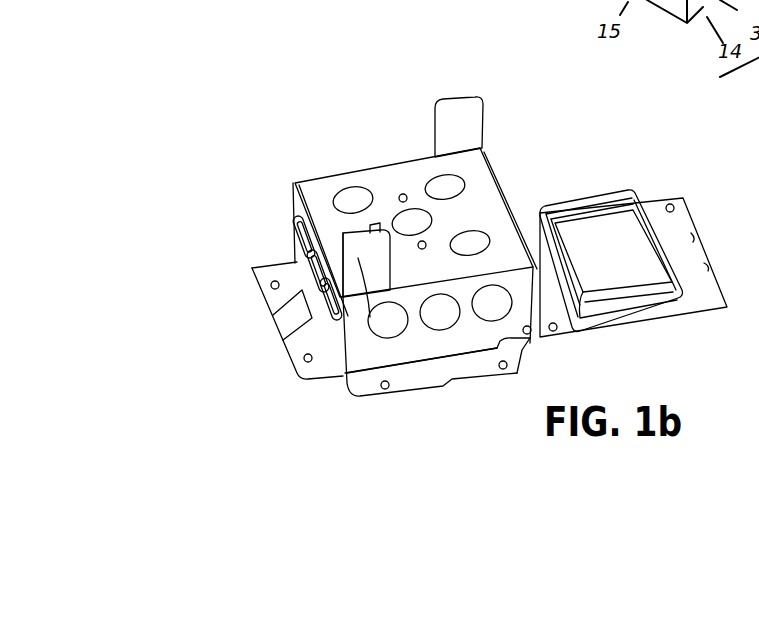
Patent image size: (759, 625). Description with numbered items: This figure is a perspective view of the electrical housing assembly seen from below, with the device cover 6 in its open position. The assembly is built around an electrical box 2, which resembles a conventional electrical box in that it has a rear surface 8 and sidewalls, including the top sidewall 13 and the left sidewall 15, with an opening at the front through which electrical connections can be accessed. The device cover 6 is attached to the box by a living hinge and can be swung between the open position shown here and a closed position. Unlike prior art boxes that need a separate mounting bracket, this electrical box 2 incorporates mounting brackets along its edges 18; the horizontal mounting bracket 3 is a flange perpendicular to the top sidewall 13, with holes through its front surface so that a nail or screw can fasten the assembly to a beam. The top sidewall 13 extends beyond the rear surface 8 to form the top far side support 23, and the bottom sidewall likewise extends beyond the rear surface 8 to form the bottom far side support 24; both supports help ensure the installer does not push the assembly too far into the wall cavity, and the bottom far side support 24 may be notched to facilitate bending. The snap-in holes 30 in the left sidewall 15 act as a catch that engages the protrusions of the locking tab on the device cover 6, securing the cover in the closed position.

The electrical box 2 is at (488, 88).
The horizontal mounting bracket 3 is at (473, 370).
The device cover 6 is at (678, 224).
The rear surface 8 is at (472, 207).
The top sidewall 13 is at (388, 350).
The left sidewall 15 is at (300, 267).
The edges 18 is at (250, 270).
The top far side support 23 is at (355, 350).
The bottom far side support 24 is at (472, 122).
The snap-in holes 30 is at (282, 318).